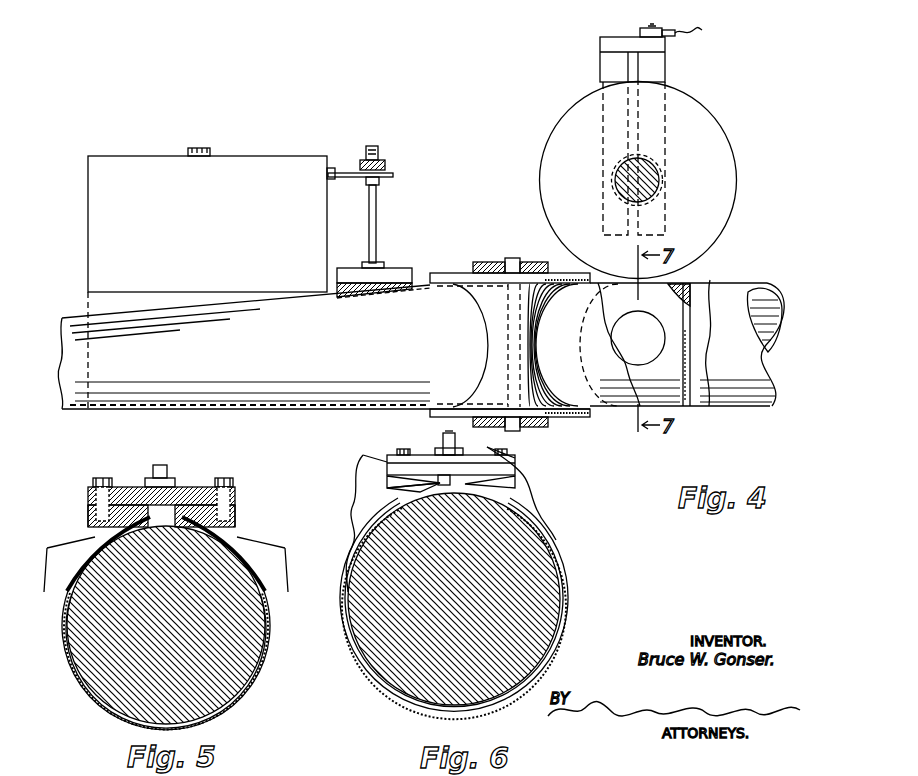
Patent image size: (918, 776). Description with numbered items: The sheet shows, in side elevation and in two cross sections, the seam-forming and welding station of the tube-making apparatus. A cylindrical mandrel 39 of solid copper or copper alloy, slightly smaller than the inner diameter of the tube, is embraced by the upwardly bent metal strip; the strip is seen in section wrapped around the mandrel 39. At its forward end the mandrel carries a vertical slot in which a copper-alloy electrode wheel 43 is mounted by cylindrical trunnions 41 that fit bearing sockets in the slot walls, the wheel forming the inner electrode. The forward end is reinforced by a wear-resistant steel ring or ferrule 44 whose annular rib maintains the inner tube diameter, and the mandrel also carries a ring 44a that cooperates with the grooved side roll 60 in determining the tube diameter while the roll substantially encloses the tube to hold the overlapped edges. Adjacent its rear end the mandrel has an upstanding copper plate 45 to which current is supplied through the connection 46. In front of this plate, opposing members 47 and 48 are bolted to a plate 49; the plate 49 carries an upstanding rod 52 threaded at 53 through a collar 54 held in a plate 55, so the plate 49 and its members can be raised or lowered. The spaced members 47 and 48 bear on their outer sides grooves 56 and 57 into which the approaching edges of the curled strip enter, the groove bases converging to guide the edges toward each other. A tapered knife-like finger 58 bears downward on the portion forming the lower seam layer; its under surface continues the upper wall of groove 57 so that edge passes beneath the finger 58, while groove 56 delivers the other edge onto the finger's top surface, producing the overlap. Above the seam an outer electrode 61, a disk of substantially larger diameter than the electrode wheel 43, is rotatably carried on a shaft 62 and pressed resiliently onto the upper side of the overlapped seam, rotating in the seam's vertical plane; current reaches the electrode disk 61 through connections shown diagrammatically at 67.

In FIG. 4, the mandrel 39 is at (100, 300).
In FIG. 5, the mandrel 39 is at (102, 680).
In FIG. 6, the mandrel 39 is at (390, 656).
In FIG. 4, the cylindrical trunnions 41 is at (628, 338).
In FIG. 4, the electrode wheel 43 is at (582, 352).
In FIG. 4, the ring or ferrule 44 is at (686, 342).
In FIG. 4, the ring 44a is at (508, 366).
In FIG. 4, the upstanding plate 45 is at (110, 196).
In FIG. 4, the connection 46 is at (200, 148).
In FIG. 5, the opposing member 47 is at (88, 510).
In FIG. 6, the opposing member 47 is at (515, 466).
In FIG. 4, the opposing member 48 is at (348, 296).
In FIG. 5, the opposing member 48 is at (236, 508).
In FIG. 6, the opposing member 48 is at (387, 470).
In FIG. 4, the plate 49 is at (388, 272).
In FIG. 5, the plate 49 is at (198, 487).
In FIG. 4, the upstanding rod 52 is at (376, 223).
In FIG. 5, the upstanding rod 52 is at (158, 466).
In FIG. 6, the upstanding rod 52 is at (440, 440).
In FIG. 4, the threaded portion 53 is at (373, 146).
In FIG. 4, the collar 54 is at (362, 162).
In FIG. 4, the plate 55 is at (392, 175).
In FIG. 5, the groove 56 is at (60, 556).
In FIG. 5, the groove 57 is at (262, 540).
In FIG. 6, the groove 57 is at (412, 482).
In FIG. 6, the tapered knife-like finger 58 is at (470, 485).
In FIG. 4, the side roll 60 is at (470, 273).
In FIG. 4, the outer electrode 61 is at (705, 126).
In FIG. 4, the shaft 62 is at (660, 180).
In FIG. 4, the connections 67 is at (690, 30).